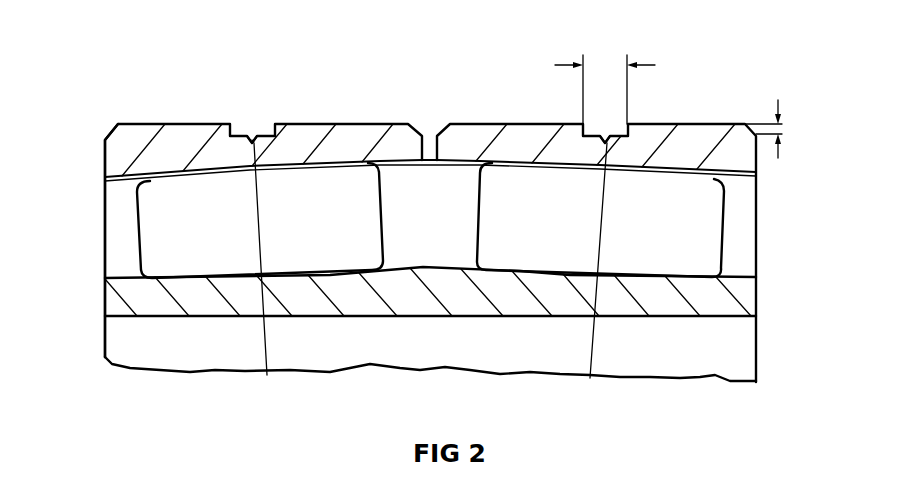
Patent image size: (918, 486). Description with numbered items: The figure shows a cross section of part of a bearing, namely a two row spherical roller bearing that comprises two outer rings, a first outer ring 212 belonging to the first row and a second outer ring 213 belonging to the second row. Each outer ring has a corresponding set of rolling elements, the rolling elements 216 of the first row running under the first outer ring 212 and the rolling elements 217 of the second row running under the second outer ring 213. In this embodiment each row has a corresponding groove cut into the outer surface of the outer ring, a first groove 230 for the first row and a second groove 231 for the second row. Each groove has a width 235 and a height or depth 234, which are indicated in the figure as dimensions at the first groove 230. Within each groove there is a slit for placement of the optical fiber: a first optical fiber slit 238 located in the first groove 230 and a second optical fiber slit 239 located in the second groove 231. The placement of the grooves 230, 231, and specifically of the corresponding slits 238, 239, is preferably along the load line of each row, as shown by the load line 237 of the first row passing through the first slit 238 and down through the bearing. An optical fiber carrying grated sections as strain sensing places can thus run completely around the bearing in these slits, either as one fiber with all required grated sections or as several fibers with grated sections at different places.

The first outer ring 212 is at (757, 150).
The second outer ring 213 is at (104, 160).
The rolling elements of first row 216 is at (724, 233).
The rolling elements of second row 217 is at (137, 227).
The first groove 230 is at (575, 118).
The second groove 231 is at (262, 120).
The height/depth of groove 234 is at (782, 128).
The width of groove 235 is at (607, 65).
The load line of first row 237 is at (593, 358).
The first optical fiber slit 238 is at (608, 133).
The second optical fiber slit 239 is at (252, 140).